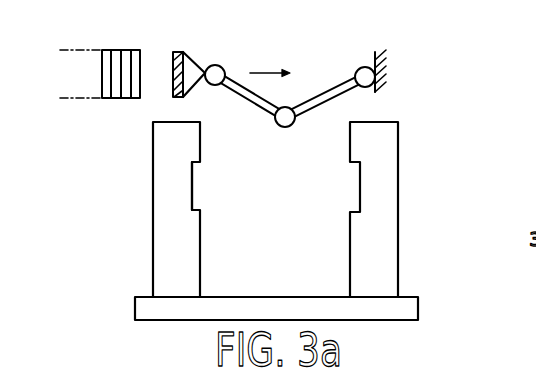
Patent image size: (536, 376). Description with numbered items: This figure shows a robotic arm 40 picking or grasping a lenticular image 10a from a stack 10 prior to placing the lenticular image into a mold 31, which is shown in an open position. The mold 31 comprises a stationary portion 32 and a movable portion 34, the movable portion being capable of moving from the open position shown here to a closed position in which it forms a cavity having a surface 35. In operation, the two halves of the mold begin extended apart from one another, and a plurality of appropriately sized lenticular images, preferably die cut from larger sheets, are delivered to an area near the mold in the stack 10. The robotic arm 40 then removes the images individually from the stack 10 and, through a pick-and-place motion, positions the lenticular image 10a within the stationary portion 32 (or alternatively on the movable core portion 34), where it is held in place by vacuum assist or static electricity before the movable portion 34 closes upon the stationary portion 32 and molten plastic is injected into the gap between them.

The stack 10 is at (115, 31).
The lenticular image 10a is at (173, 68).
The robotic arm 40 is at (235, 67).
The mold 31 is at (276, 178).
The stationary portion 32 is at (387, 152).
The movable portion 34 is at (163, 266).
The surface 35 is at (193, 188).